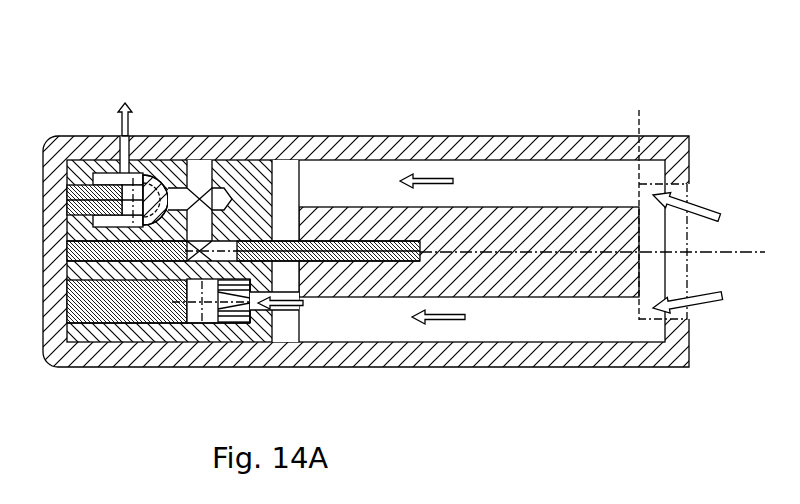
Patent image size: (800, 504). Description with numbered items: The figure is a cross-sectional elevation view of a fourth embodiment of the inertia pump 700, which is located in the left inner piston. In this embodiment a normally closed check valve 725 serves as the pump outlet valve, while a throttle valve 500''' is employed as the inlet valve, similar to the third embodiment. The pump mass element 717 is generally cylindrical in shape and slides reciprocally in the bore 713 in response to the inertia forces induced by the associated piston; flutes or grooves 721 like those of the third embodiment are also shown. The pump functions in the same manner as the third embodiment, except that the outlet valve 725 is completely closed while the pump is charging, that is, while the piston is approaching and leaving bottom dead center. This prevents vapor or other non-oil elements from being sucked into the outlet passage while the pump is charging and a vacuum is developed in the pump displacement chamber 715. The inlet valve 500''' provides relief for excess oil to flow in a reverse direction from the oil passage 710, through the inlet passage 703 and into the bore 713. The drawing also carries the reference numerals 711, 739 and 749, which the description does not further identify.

The inertia pump 700 is at (660, 117).
The inlet passage 703 is at (300, 300).
The oil passage 710 is at (183, 203).
The vent port 711 is at (121, 136).
The bore 713 is at (282, 342).
The pump displacement chamber 715 is at (223, 256).
The pump mass element 717 is at (335, 200).
The flutes or grooves 721 is at (510, 178).
The check valve 725 is at (156, 193).
The inlet flow 739 is at (637, 402).
The inlet opening 749 is at (693, 273).
The throttle valve 500''' is at (223, 356).